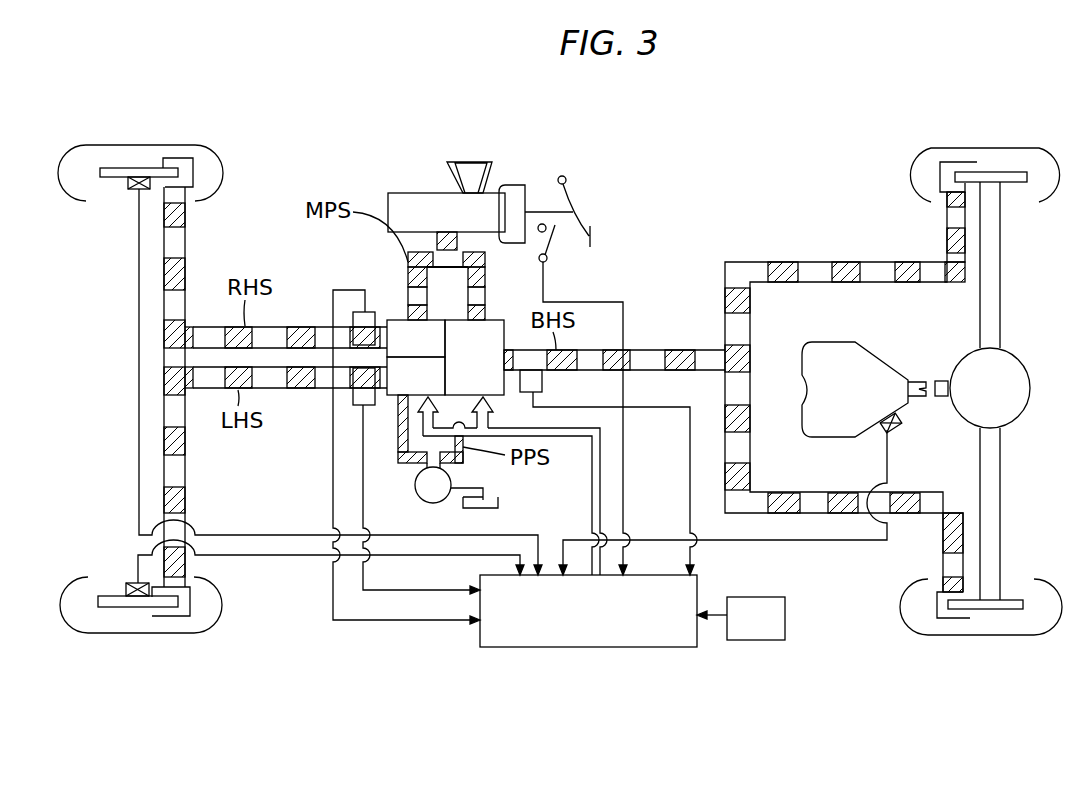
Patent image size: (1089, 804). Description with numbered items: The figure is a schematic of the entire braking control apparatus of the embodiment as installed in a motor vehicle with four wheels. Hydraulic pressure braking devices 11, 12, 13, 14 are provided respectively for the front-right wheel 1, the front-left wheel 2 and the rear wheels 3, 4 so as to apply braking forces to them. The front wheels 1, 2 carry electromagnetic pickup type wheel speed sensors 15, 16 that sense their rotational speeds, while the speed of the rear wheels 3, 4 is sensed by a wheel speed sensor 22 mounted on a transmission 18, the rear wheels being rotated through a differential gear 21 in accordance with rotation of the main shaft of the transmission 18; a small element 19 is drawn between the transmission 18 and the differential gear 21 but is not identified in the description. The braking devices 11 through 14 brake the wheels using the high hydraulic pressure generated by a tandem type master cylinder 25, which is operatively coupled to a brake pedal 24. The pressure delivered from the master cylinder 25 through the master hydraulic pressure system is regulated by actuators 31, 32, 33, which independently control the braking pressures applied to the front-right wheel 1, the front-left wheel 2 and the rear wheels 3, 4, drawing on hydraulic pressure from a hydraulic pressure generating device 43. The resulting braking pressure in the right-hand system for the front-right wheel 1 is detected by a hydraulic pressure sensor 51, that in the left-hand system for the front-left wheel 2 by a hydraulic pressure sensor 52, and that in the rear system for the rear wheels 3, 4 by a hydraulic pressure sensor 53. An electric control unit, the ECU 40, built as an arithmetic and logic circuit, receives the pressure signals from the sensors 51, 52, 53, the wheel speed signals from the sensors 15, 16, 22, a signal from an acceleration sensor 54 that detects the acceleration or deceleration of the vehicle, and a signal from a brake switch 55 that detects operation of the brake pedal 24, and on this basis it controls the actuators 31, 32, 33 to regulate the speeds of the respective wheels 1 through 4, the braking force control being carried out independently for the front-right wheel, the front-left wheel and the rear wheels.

The front-right wheel 1 is at (95, 145).
The front-left wheel 2 is at (97, 633).
The rear wheel 3 is at (992, 148).
The rear wheel 4 is at (930, 635).
The hydraulic pressure braking device 11 is at (202, 177).
The hydraulic pressure braking device 12 is at (199, 598).
The hydraulic pressure braking device 13 is at (935, 181).
The hydraulic pressure braking device 14 is at (932, 601).
The wheel speed sensor 15 is at (128, 183).
The wheel speed sensor 16 is at (127, 584).
The transmission 18 is at (884, 342).
The propeller shaft coupling 19 is at (940, 381).
The differential gear 21 is at (1025, 365).
The wheel speed sensor 22 is at (897, 431).
The brake pedal 24 is at (566, 198).
The tandem type master cylinder 25 is at (497, 192).
The actuator 31 is at (398, 318).
The actuator 32 is at (395, 397).
The actuator 33 is at (498, 318).
The electric control unit (ECU) 40 is at (682, 647).
The hydraulic pressure generating device 43 is at (411, 486).
The hydraulic pressure sensor 51 is at (352, 311).
The hydraulic pressure sensor 52 is at (352, 403).
The hydraulic pressure sensor 53 is at (545, 381).
The acceleration sensor 54 is at (773, 640).
The brake switch 55 is at (553, 242).